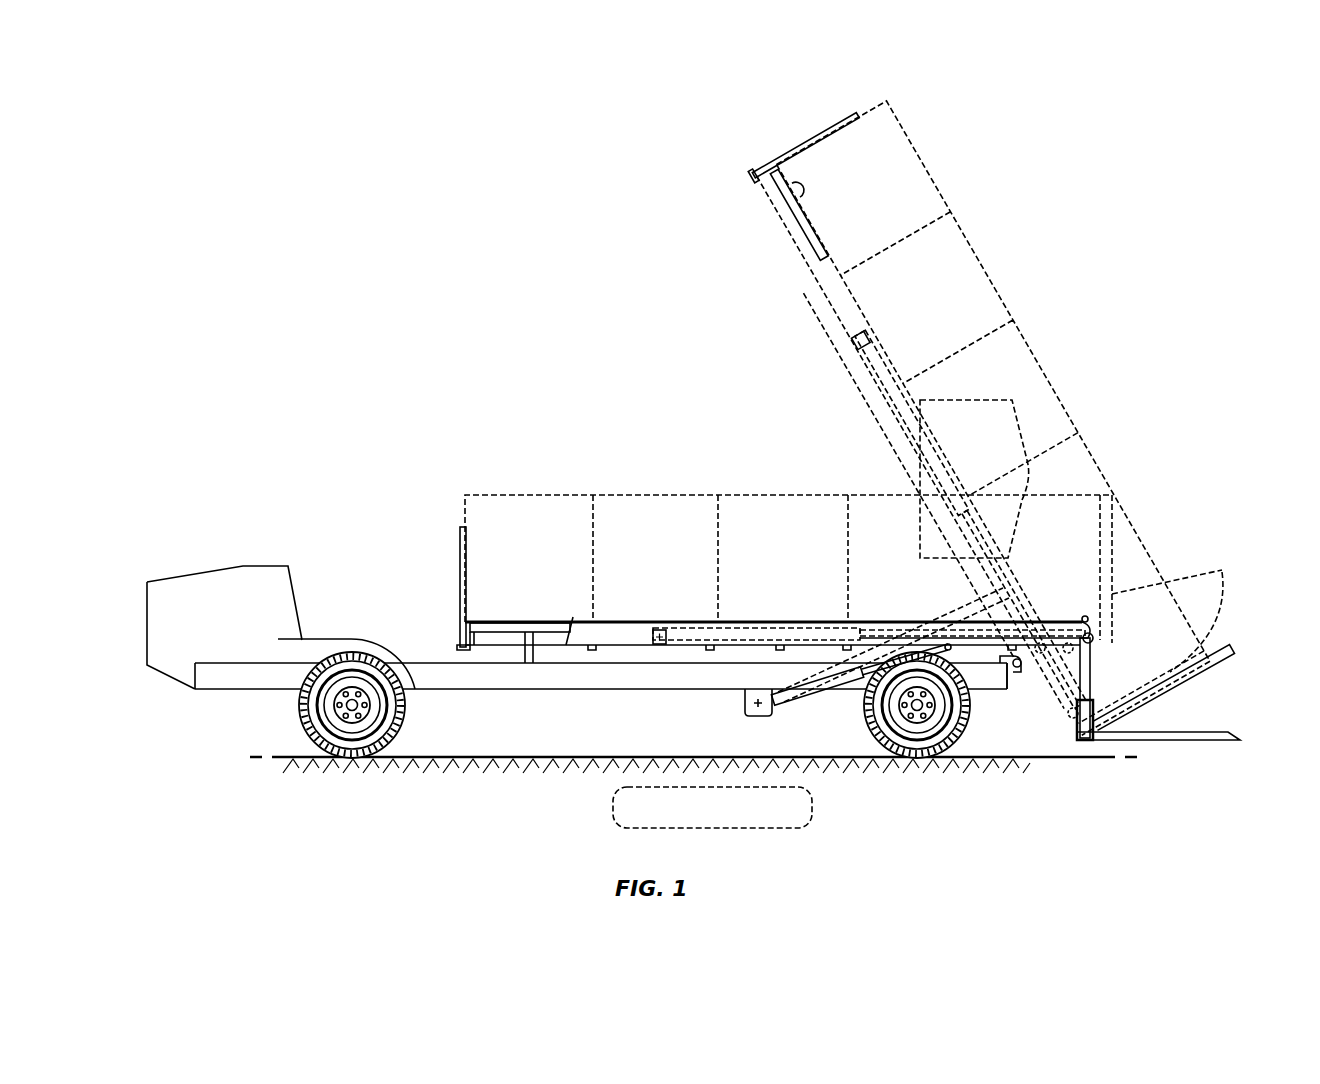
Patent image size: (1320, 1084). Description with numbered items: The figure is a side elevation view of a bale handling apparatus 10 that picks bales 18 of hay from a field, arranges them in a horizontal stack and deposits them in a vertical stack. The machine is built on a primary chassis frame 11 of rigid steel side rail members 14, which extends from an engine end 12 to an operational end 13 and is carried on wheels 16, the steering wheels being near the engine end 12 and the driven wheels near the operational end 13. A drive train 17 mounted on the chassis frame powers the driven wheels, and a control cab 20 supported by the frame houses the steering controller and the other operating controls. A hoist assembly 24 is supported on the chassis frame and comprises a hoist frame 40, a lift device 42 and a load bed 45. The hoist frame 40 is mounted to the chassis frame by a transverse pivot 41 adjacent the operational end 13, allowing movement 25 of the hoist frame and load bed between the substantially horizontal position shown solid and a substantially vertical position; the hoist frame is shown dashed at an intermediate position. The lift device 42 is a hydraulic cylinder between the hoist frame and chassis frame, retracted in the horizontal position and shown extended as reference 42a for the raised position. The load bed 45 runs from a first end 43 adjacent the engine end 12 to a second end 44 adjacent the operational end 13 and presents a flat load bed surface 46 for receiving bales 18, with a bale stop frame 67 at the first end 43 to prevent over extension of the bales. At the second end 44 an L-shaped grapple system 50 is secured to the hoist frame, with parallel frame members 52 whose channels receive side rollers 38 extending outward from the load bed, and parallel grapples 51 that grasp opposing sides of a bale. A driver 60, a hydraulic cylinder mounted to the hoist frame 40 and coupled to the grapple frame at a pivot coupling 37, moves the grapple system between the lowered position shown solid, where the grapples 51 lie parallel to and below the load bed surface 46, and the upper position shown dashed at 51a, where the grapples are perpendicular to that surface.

The bale handling apparatus 10 is at (341, 331).
The primary chassis frame 11 is at (478, 680).
The engine end 12 is at (137, 630).
The operational end 13 is at (1209, 633).
The side rail members 14 is at (572, 680).
The wheels 16 is at (327, 728).
The drive train 17 is at (232, 575).
The bales 18 is at (540, 567).
The control cab 20 is at (1015, 415).
The hoist assembly 24 is at (748, 828).
The movement of hoist frame and load bed 25 is at (738, 340).
The pivot coupling 37 is at (1085, 620).
The side rollers 38 is at (1097, 637).
The hoist frame 40 is at (688, 657).
The pivot 41 is at (1017, 668).
The lift device 42 is at (798, 697).
The extended lift device 42a is at (818, 668).
The first end of load bed 43 is at (460, 622).
The second end of load bed 44 is at (1068, 622).
The load bed 45 is at (630, 635).
The load bed surface 46 is at (663, 620).
The grapple system 50 is at (1199, 698).
The grapples 51 is at (1200, 742).
The grapples in upper position 51a is at (1127, 588).
The frame members 52 is at (1087, 668).
The driver 60 is at (760, 633).
The bale stop frame 67 is at (459, 527).